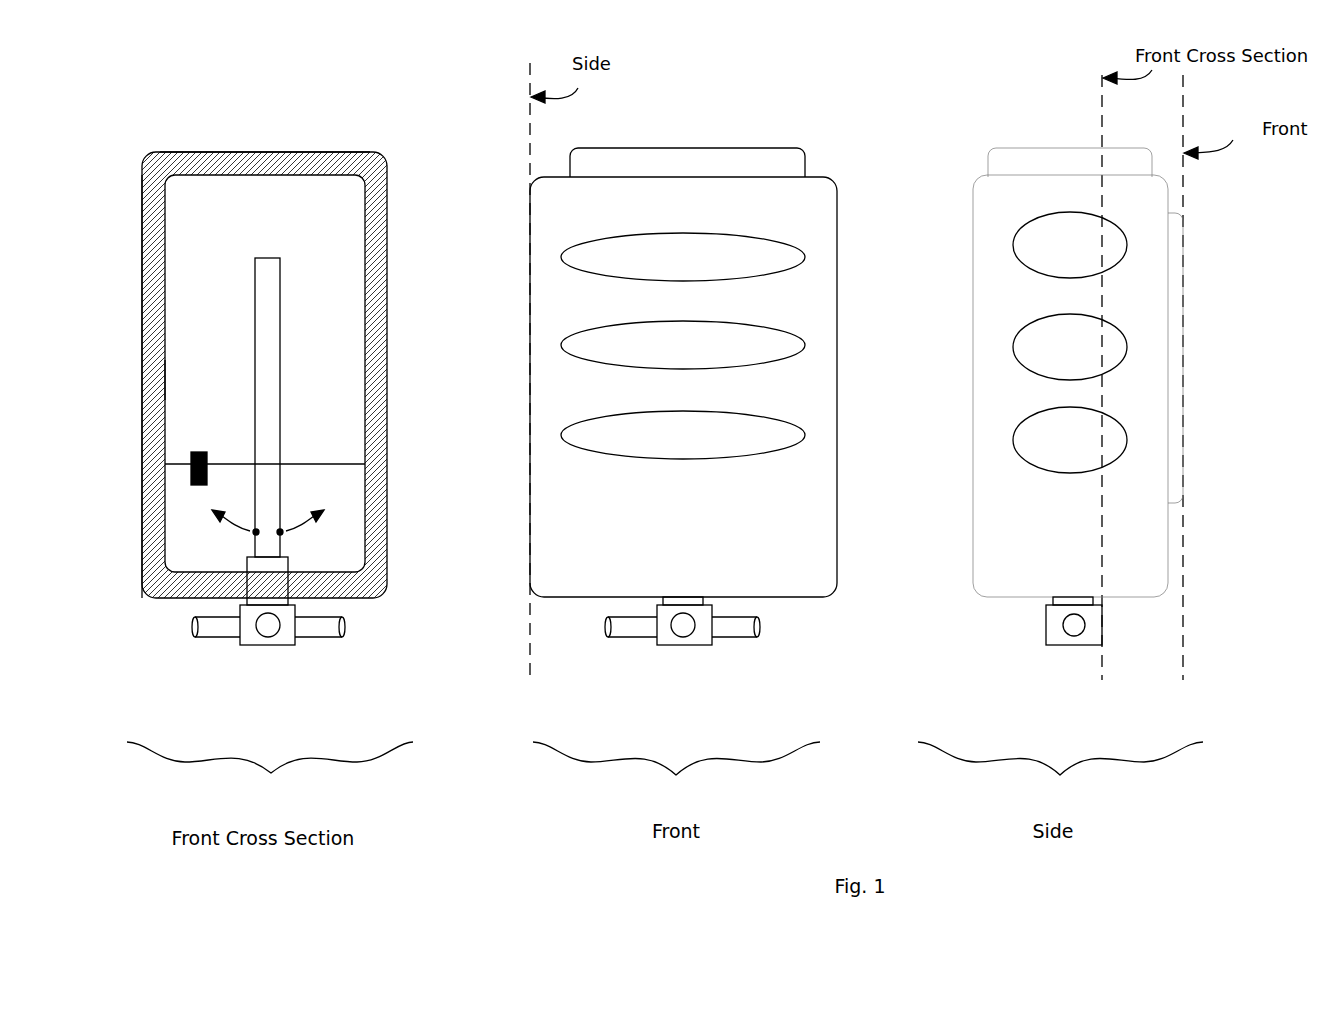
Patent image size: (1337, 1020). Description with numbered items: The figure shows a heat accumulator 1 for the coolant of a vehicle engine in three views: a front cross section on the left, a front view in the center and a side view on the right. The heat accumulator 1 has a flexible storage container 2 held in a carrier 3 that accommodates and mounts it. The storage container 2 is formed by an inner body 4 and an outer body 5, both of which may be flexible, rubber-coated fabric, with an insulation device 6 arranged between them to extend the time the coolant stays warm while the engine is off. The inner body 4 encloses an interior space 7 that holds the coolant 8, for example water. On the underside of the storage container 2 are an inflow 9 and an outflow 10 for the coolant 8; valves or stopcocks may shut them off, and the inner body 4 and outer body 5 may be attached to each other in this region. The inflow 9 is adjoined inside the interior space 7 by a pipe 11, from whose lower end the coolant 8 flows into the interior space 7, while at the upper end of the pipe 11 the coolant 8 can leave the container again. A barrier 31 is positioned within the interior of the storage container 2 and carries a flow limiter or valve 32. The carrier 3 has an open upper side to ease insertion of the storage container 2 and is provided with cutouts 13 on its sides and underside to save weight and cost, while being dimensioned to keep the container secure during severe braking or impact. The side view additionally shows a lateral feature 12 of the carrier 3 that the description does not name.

The heat accumulator 1 is at (176, 681).
The storage container 2 is at (176, 110).
The carrier 3 is at (820, 292).
The inner body 4 is at (175, 383).
The outer body 5 is at (142, 288).
The insulation device 6 is at (372, 244).
The interior space 7 is at (180, 203).
The coolant 8 is at (335, 495).
The inflow 9 is at (322, 640).
The outflow 10 is at (228, 640).
The pipe 11 is at (265, 333).
The side protrusion 12 is at (1175, 258).
The cutouts 13 is at (770, 436).
The barrier 31 is at (340, 462).
The flow limiter/valve 32 is at (190, 477).